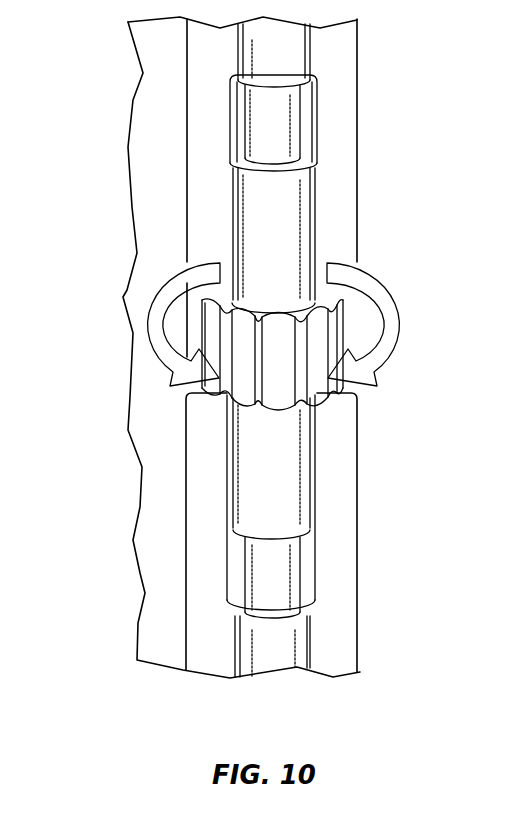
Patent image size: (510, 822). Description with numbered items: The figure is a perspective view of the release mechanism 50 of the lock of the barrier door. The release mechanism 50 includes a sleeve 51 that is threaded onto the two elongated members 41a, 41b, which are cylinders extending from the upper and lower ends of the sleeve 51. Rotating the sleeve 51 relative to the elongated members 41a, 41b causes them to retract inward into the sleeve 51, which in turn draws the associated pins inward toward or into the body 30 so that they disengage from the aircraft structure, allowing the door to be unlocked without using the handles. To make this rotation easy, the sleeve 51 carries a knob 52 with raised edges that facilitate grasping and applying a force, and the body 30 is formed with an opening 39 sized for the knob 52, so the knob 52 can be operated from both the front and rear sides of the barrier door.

The body 30 is at (163, 92).
The release mechanism 50 is at (83, 270).
The elongated member 41a is at (290, 110).
The sleeve 51 is at (300, 218).
The knob 52 is at (333, 333).
The opening 39 is at (378, 381).
The elongated member 41b is at (290, 573).